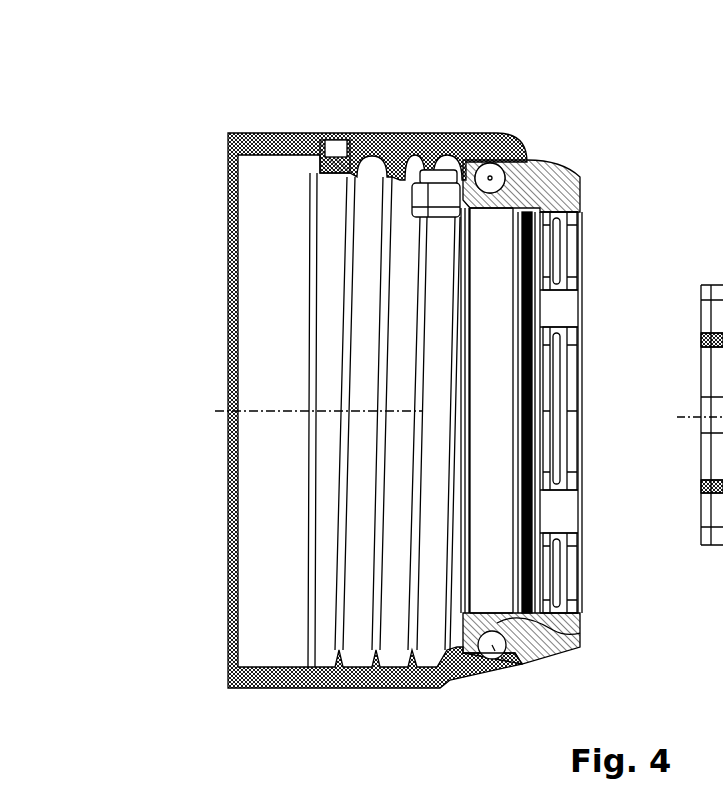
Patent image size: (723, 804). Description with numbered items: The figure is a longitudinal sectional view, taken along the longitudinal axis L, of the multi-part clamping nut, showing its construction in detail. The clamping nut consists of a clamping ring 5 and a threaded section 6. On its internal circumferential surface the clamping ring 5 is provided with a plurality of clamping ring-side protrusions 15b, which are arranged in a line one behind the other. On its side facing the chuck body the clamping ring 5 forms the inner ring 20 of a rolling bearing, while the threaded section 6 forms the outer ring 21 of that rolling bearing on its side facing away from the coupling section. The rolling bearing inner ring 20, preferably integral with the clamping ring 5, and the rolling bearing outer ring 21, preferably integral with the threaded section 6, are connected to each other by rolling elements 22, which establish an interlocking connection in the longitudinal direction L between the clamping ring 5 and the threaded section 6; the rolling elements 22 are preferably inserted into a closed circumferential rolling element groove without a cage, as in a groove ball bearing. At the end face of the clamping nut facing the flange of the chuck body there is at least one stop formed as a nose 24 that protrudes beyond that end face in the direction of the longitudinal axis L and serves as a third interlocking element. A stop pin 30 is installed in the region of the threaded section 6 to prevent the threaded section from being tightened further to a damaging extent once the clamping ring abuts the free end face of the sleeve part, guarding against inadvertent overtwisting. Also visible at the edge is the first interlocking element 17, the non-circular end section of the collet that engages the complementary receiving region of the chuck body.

The clamping ring 5 is at (548, 190).
The threaded section 6 is at (343, 680).
The clamping ring-side protrusions 15b is at (545, 270).
The first interlocking element 17 is at (712, 422).
The rolling bearing inner ring 20 is at (553, 633).
The rolling bearing outer ring 21 is at (478, 667).
The rolling elements 22 is at (503, 652).
The nose 24 is at (418, 197).
The stop pin 30 is at (317, 167).
The longitudinal axis L is at (260, 408).